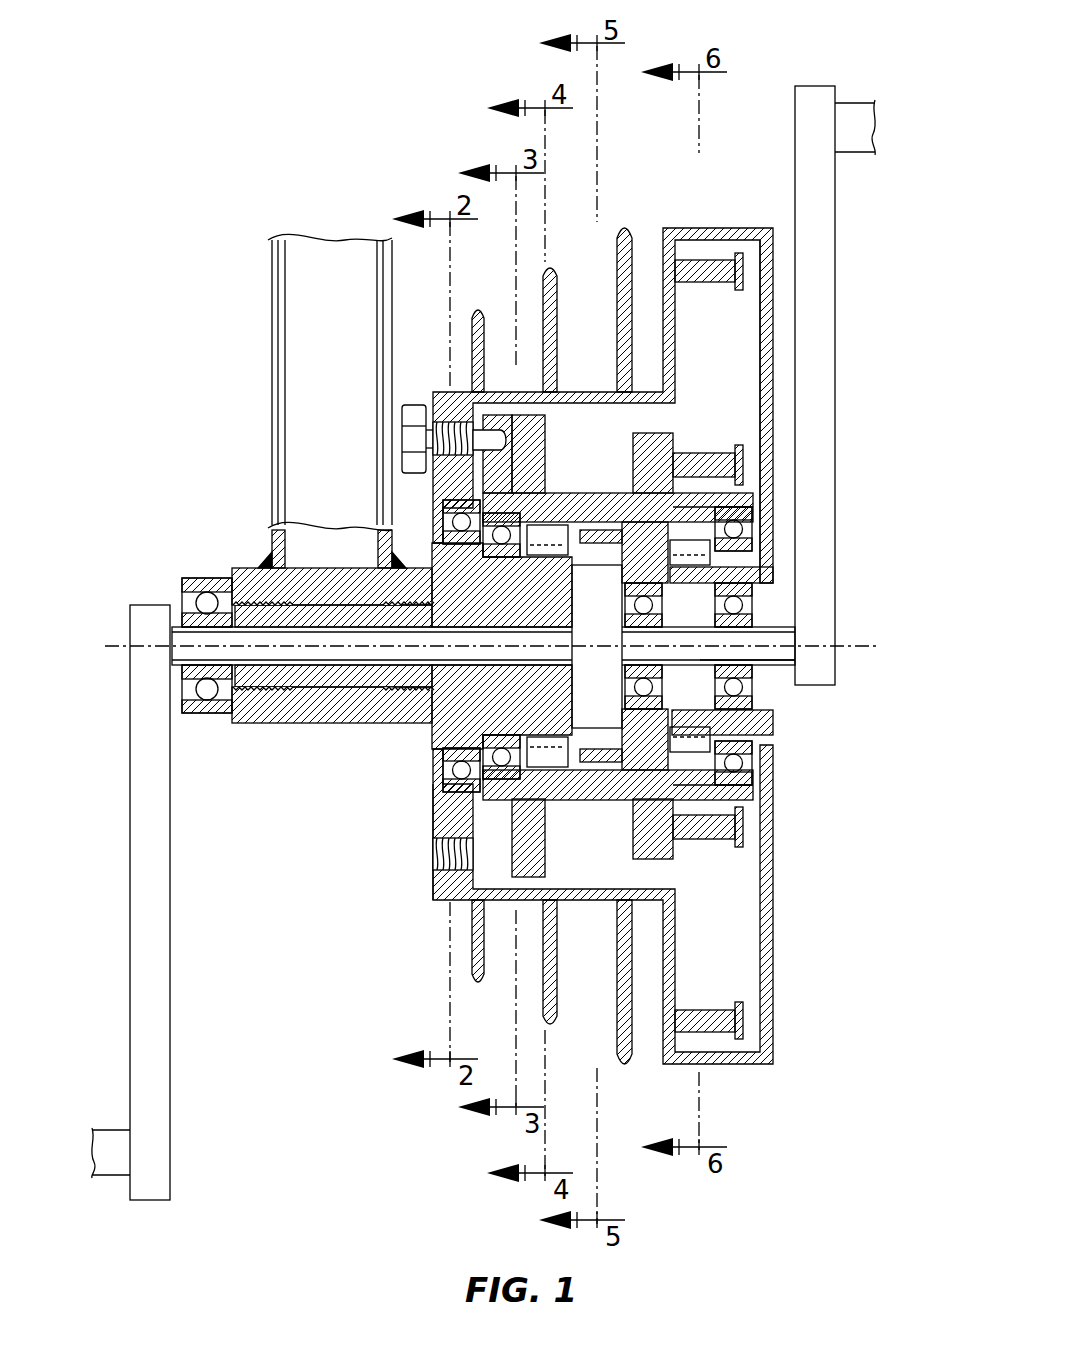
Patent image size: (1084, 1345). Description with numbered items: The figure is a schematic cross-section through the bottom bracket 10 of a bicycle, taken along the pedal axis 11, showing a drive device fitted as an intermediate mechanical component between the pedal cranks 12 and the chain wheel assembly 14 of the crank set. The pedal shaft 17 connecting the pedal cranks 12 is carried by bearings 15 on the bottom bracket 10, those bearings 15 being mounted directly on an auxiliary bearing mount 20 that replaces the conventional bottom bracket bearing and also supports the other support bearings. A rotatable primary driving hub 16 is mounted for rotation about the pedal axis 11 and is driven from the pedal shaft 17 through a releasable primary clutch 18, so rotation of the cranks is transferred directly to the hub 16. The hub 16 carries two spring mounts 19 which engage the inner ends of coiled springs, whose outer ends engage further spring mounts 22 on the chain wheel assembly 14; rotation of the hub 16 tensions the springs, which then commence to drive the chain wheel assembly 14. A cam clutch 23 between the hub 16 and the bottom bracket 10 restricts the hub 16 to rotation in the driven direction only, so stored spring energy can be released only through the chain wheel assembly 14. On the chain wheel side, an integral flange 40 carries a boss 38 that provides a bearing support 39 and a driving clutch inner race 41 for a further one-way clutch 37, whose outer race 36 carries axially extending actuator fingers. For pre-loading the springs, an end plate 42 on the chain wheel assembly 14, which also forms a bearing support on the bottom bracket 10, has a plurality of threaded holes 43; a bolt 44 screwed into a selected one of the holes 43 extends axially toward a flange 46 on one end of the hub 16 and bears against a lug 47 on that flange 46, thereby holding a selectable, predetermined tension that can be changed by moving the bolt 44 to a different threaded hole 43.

The bottom bracket 10 is at (262, 516).
The pedal axis 11 is at (850, 648).
The pedal cranks 12 is at (822, 300).
The chain wheel assembly 14 is at (638, 216).
The bearings 15 is at (193, 598).
The primary driving hub 16 is at (692, 497).
The pedal shaft 17 is at (772, 662).
The primary clutch 18 is at (597, 742).
The spring mounts 19 is at (720, 444).
The auxiliary bearing mount 20 is at (318, 704).
The spring mounts 22 is at (705, 272).
The cam clutch 23 is at (535, 745).
The outer race 36 is at (735, 528).
The one-way clutch 37 is at (690, 555).
The boss 38 is at (770, 590).
The bearing support 39 is at (745, 735).
The integral flange 40 is at (760, 396).
The driving clutch inner race 41 is at (637, 505).
The end plate 42 is at (433, 892).
The threaded holes 43 is at (433, 855).
The bolt 44 is at (412, 405).
The flange 46 is at (540, 842).
The lug 47 is at (492, 414).